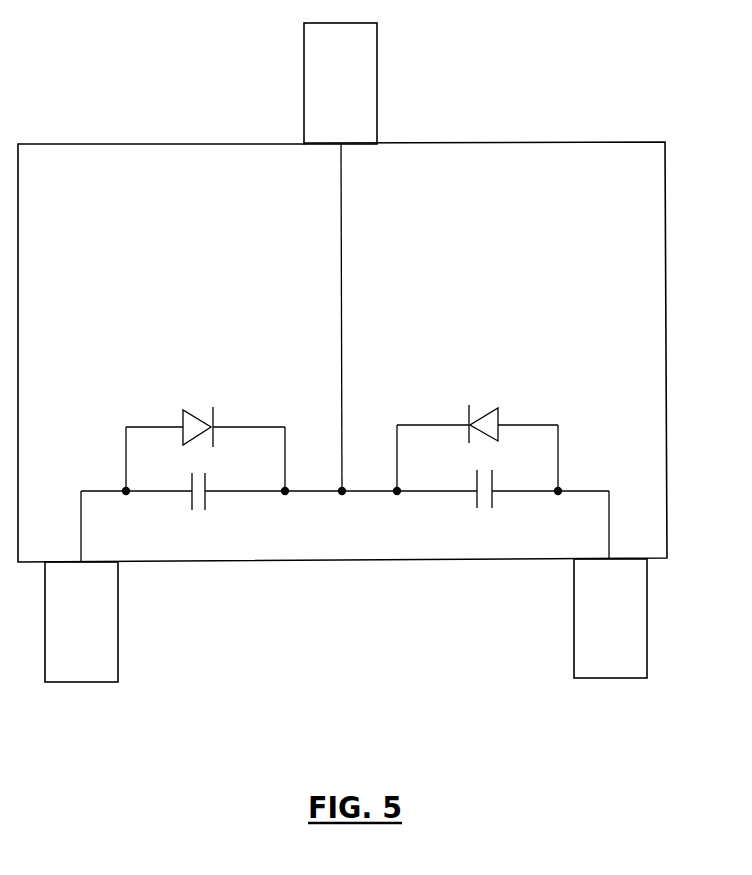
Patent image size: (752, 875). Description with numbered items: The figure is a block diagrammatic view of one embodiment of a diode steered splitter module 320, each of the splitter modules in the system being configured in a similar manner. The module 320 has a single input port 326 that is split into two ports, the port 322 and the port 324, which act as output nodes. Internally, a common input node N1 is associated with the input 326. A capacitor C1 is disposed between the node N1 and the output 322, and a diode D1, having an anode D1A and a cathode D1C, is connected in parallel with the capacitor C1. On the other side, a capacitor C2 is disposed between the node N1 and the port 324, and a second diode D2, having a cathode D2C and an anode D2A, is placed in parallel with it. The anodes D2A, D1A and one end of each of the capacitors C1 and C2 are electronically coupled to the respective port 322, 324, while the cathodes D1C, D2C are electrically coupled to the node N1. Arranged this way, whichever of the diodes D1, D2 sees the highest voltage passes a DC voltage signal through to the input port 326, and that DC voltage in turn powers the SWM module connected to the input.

The diode steered splitter module 320 is at (530, 142).
The input port 326 is at (377, 68).
The output port 322 is at (118, 601).
The output port 324 is at (574, 598).
The diode D1 is at (163, 415).
The anode D1A is at (183, 433).
The cathode D1C is at (215, 437).
The second diode D2 is at (520, 404).
The anode D2A is at (498, 430).
The cathode D2C is at (467, 422).
The capacitor C1 is at (204, 522).
The capacitor C2 is at (488, 518).
The common input node N1 is at (342, 494).